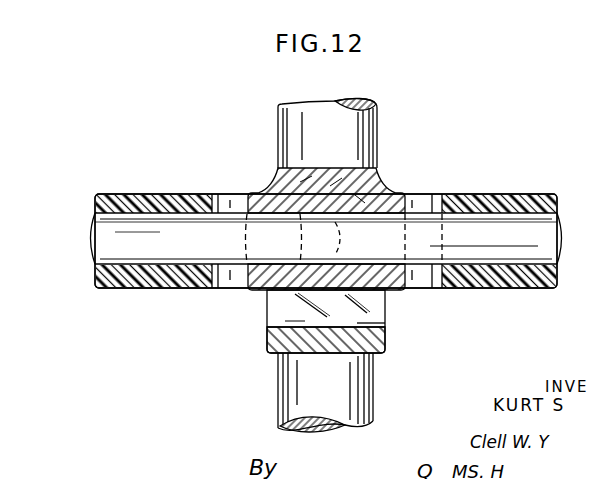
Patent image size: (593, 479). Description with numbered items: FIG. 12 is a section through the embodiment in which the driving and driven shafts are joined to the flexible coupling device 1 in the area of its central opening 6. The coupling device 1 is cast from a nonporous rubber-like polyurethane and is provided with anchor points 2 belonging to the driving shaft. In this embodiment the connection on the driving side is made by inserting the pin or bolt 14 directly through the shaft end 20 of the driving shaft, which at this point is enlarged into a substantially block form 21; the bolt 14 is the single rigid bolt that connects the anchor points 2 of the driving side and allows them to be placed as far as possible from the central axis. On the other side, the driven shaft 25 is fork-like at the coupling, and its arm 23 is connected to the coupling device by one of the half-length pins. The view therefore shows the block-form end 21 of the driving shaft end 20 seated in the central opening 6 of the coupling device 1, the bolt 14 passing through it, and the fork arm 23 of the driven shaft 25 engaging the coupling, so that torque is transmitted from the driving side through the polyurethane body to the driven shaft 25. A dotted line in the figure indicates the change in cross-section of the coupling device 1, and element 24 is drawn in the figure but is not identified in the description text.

The flexible coupling device 1 is at (88, 205).
The anchor points 2 is at (508, 196).
The central opening 6 is at (224, 193).
The bolt 14 is at (422, 220).
The shaft end 20 is at (378, 132).
The block form 21 is at (278, 294).
The arm 23 is at (281, 314).
The gasket 24 is at (358, 326).
The driven shaft 25 is at (365, 389).